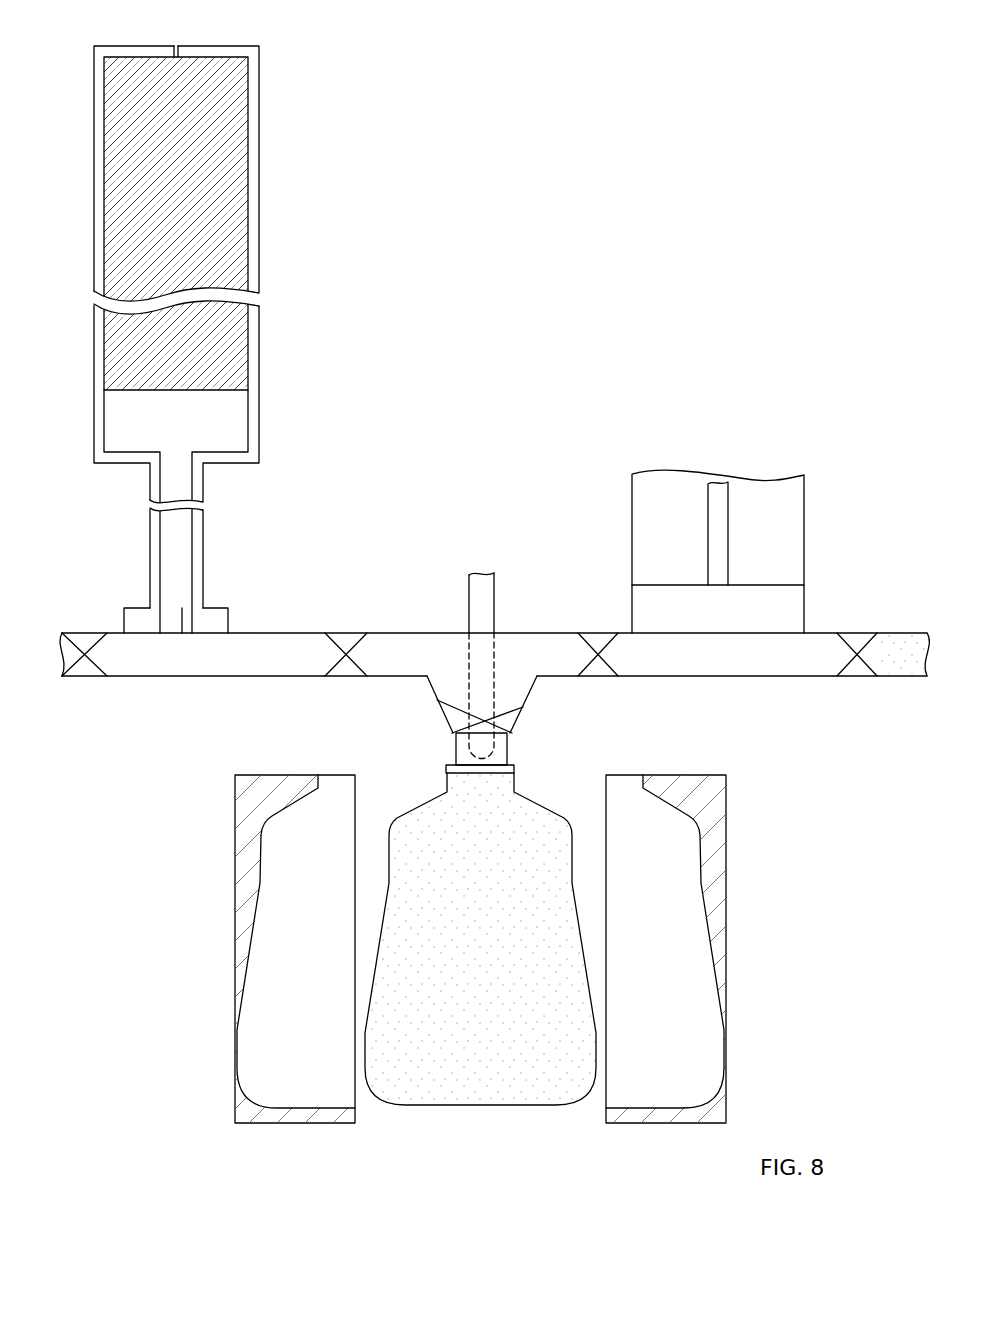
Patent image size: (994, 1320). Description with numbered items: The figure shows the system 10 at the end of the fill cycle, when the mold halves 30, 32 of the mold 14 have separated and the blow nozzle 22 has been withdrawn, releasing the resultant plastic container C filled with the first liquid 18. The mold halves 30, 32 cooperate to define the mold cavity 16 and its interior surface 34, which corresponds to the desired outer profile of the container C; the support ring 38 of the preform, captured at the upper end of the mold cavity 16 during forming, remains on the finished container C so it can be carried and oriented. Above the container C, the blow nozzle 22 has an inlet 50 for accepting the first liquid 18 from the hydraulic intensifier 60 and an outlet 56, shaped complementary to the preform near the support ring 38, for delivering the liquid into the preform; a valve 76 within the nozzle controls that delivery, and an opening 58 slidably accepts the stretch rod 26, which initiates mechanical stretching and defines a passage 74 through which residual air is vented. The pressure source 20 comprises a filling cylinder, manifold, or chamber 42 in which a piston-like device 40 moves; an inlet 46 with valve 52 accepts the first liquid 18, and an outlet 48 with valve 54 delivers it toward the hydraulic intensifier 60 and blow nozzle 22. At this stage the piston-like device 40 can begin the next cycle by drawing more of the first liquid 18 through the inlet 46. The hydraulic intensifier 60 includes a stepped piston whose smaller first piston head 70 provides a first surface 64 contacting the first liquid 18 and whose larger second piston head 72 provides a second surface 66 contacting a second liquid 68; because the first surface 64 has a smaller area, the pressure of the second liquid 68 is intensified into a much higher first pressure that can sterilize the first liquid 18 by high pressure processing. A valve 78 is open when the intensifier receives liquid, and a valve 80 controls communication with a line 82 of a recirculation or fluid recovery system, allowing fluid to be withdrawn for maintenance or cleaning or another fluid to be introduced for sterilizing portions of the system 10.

The system 10 is at (672, 157).
The mold 14 is at (248, 949).
The mold cavity 16 is at (711, 949).
The first liquid 18 is at (760, 676).
The pressure source 20 is at (715, 502).
The blow nozzle 22 is at (437, 700).
The stretch rod 26 is at (469, 578).
The mold half 30 is at (235, 1107).
The mold half 32 is at (726, 1107).
The interior surface 34 is at (252, 955).
The support ring 38 is at (446, 770).
The piston-like device 40 is at (787, 613).
The filling cylinder, manifold, or chamber 42 is at (632, 515).
The inlet 46 is at (900, 636).
The outlet 48 is at (627, 633).
The inlet 50 is at (427, 678).
The valve 52 is at (858, 676).
The valve 54 is at (599, 676).
The outlet 56 is at (452, 734).
The opening 58 is at (470, 633).
The hydraulic intensifier 60 is at (185, 329).
The first surface 64 is at (178, 614).
The second surface 66 is at (215, 390).
The second liquid 68 is at (228, 160).
The first piston head 70 is at (190, 565).
The second piston head 72 is at (98, 263).
The passage 74 is at (494, 612).
The valve 76 is at (513, 725).
The valve 78 is at (335, 676).
The valve 80 is at (91, 676).
The line 82 is at (67, 676).
The container C is at (565, 1000).